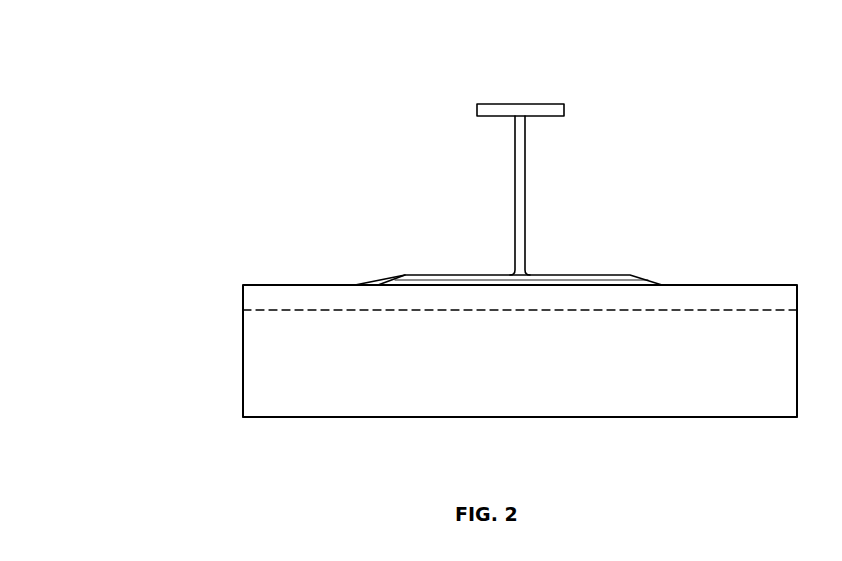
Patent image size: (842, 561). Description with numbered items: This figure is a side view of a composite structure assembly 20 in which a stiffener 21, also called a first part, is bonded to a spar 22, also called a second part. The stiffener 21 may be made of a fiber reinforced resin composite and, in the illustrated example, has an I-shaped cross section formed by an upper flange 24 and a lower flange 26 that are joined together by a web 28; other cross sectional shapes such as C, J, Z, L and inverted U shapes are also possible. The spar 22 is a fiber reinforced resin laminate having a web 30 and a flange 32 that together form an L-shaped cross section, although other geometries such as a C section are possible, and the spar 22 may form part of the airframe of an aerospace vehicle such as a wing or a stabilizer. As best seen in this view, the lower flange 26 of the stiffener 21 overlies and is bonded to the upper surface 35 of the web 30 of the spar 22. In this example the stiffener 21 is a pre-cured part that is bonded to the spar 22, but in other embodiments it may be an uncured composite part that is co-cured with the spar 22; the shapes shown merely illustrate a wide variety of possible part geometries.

The composite structure assembly 20 is at (586, 92).
The stiffener 21 is at (496, 211).
The spar 22 is at (222, 342).
The upper flange 24 is at (519, 110).
The lower flange 26 is at (607, 279).
The web 28 is at (527, 190).
The web 30 is at (267, 283).
The flange 32 is at (324, 375).
The upper surface 35 is at (355, 282).